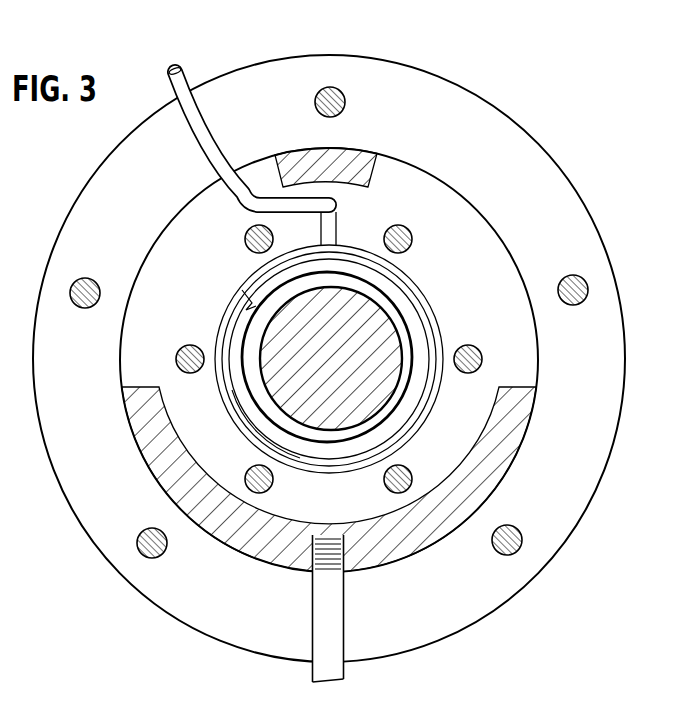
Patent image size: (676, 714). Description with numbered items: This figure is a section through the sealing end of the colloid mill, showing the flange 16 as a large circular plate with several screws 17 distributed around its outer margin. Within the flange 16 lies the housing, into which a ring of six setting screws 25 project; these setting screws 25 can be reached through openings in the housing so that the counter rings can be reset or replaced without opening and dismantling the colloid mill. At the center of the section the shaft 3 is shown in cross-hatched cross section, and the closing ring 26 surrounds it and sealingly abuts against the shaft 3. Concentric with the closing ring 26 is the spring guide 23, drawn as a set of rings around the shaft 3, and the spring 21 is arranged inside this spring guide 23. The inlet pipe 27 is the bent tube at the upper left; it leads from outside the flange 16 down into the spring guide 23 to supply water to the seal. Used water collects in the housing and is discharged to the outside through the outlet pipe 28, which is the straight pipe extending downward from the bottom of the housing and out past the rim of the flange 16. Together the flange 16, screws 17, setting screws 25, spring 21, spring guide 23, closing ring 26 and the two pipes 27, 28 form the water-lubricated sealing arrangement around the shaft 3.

The shaft 3 is at (340, 388).
The flange 16 is at (553, 185).
The screws 17 is at (338, 92).
The spring 21 is at (247, 287).
The spring guide 23 is at (430, 318).
The setting screws 25 is at (412, 229).
The closing ring 26 is at (382, 300).
The inlet pipe 27 is at (206, 141).
The outlet pipe 28 is at (333, 627).